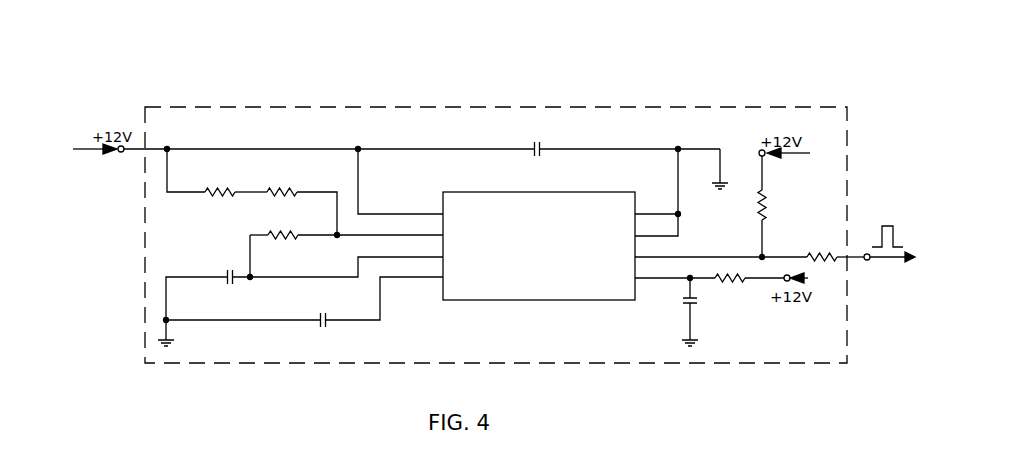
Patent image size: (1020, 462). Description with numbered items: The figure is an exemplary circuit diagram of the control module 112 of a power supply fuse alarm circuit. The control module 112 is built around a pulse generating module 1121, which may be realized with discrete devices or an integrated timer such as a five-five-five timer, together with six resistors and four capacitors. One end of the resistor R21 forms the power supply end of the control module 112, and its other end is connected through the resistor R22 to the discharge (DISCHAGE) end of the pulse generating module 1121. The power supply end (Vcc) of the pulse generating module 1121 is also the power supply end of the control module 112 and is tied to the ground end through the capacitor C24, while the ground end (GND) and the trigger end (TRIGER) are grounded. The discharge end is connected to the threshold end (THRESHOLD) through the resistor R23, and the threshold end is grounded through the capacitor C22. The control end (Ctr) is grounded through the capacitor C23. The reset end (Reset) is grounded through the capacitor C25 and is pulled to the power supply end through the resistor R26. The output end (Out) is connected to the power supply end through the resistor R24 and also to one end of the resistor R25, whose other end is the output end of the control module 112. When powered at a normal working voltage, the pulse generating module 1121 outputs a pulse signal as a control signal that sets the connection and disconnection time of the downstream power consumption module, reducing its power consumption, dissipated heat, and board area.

The control module 112 is at (515, 107).
The pulse generating module 1121 is at (527, 300).
The resistor R21 is at (219, 203).
The resistor R22 is at (282, 203).
The resistor R23 is at (283, 245).
The resistor R24 is at (780, 205).
The resistor R25 is at (823, 269).
The resistor R26 is at (731, 290).
The capacitor C22 is at (229, 288).
The capacitor C23 is at (324, 332).
The capacitor C24 is at (537, 161).
The capacitor C25 is at (671, 309).